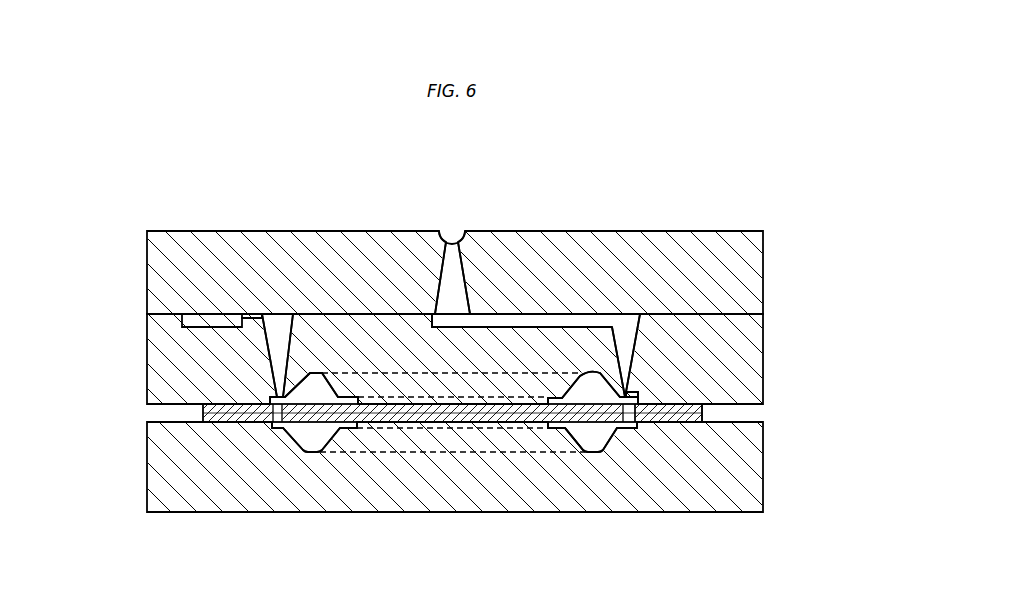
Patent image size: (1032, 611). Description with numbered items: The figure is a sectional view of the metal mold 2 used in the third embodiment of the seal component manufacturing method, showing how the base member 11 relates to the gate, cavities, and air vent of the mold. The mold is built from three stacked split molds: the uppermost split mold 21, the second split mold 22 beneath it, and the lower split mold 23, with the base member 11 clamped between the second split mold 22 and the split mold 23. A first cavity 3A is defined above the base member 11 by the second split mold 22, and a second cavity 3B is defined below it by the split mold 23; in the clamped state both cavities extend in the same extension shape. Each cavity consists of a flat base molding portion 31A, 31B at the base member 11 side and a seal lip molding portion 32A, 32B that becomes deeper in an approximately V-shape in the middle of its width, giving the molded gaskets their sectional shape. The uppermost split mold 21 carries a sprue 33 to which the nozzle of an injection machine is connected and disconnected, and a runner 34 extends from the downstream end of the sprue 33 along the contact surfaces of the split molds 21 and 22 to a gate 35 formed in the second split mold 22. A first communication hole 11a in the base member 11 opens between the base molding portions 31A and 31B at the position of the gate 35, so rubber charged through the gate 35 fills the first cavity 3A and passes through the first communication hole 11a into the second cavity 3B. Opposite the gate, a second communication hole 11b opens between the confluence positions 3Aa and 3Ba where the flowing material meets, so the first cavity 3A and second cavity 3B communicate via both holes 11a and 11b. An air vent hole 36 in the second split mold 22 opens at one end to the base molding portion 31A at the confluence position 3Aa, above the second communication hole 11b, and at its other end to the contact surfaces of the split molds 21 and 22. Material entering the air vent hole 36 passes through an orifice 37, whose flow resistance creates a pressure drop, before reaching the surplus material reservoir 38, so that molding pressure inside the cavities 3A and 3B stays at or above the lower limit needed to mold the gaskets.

The metal mold 2 is at (719, 227).
The split mold 21 is at (667, 252).
The second split mold 22 is at (693, 330).
The split mold 23 is at (717, 492).
The sprue 33 is at (452, 230).
The runner 34 is at (498, 318).
The gate 35 is at (640, 393).
The air vent hole 36 is at (279, 330).
The orifice 37 is at (250, 313).
The surplus material reservoir 38 is at (208, 320).
The seal lip molding portion 32A is at (582, 388).
The seal lip molding portion 32B is at (585, 444).
The first cavity 3A is at (594, 365).
The second cavity 3B is at (600, 442).
The confluence position 3Aa is at (315, 387).
The confluence position 3Ba is at (305, 447).
The base member 11 is at (483, 428).
The first communication hole 11a is at (653, 417).
The second communication hole 11b is at (270, 413).
The base molding portion 31A is at (645, 396).
The base molding portion 31B is at (634, 423).